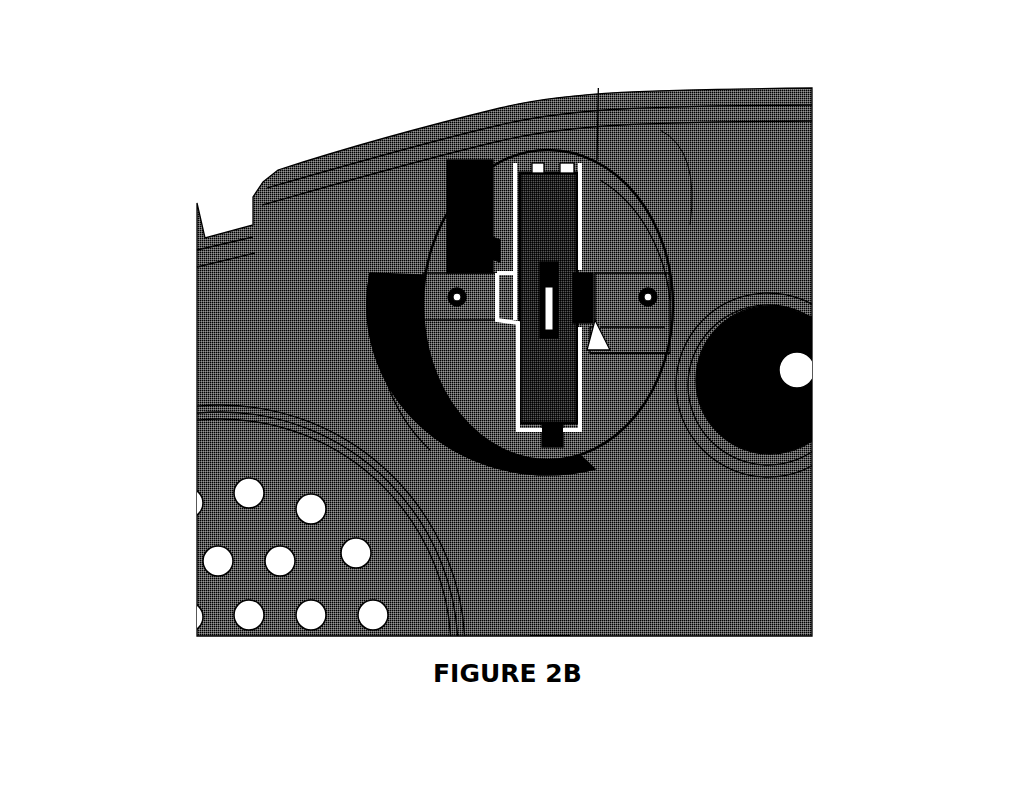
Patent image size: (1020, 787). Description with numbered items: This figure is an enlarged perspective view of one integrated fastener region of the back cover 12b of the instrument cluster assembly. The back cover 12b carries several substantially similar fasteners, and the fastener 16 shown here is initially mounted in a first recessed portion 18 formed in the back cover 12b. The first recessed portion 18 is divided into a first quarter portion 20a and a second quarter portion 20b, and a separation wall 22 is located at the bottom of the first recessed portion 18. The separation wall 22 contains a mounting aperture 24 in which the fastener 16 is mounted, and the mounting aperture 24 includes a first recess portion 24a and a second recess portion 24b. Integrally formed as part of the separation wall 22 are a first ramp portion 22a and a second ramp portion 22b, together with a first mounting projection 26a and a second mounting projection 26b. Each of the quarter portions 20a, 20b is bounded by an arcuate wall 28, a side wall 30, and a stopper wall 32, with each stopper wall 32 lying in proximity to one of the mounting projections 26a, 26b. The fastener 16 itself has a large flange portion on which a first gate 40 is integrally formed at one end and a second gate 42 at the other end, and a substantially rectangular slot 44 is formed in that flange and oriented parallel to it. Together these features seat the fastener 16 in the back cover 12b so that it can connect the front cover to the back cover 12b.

The back cover 12b is at (812, 603).
The fastener 16 is at (610, 173).
The first recessed portion 18 is at (500, 160).
The first quarter portion 20a is at (653, 260).
The second quarter portion 20b is at (470, 437).
The separation wall 22 is at (430, 383).
The first ramp portion 22a is at (647, 252).
The second ramp portion 22b is at (380, 453).
The mounting aperture 24 is at (533, 163).
The first recess portion 24a is at (445, 353).
The second recess portion 24b is at (618, 350).
The first mounting projection 26a is at (657, 297).
The second mounting projection 26b is at (448, 297).
The arcuate wall 28 is at (640, 222).
The side wall 30 is at (447, 190).
The stopper wall 32 is at (405, 282).
The first gate 40 is at (545, 165).
The second gate 42 is at (547, 637).
The slot 44 is at (520, 257).